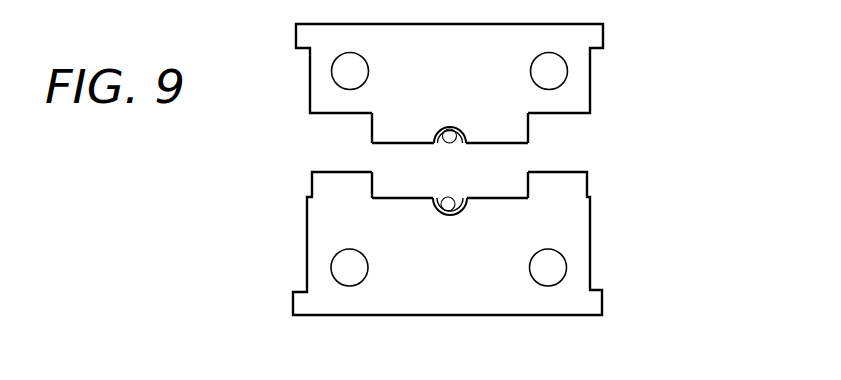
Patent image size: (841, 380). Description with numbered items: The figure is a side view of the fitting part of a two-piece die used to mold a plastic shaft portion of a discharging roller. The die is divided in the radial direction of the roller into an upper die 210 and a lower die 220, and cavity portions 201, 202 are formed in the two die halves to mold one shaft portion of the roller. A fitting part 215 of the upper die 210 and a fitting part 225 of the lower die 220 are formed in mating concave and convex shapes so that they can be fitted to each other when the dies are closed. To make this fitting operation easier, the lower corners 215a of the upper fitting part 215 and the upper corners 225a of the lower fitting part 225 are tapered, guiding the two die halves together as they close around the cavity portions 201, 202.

The upper die 210 is at (605, 76).
The lower die 220 is at (605, 248).
The cavity portion 201 is at (452, 127).
The cavity portion 202 is at (451, 216).
The fitting part of the upper die 215 is at (500, 130).
The lower corners of the upper fitting part 215a is at (370, 131).
The fitting part of the lower die 225 is at (493, 190).
The upper corners of the lower fitting part 225a is at (377, 183).